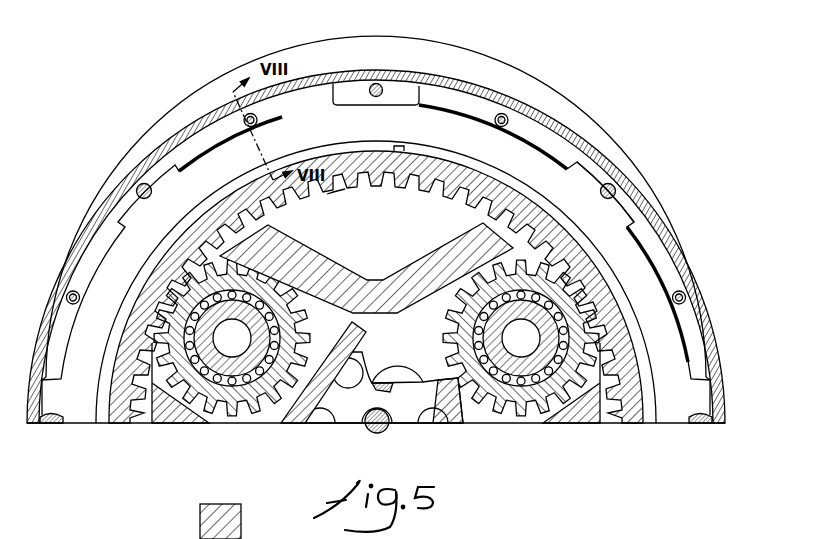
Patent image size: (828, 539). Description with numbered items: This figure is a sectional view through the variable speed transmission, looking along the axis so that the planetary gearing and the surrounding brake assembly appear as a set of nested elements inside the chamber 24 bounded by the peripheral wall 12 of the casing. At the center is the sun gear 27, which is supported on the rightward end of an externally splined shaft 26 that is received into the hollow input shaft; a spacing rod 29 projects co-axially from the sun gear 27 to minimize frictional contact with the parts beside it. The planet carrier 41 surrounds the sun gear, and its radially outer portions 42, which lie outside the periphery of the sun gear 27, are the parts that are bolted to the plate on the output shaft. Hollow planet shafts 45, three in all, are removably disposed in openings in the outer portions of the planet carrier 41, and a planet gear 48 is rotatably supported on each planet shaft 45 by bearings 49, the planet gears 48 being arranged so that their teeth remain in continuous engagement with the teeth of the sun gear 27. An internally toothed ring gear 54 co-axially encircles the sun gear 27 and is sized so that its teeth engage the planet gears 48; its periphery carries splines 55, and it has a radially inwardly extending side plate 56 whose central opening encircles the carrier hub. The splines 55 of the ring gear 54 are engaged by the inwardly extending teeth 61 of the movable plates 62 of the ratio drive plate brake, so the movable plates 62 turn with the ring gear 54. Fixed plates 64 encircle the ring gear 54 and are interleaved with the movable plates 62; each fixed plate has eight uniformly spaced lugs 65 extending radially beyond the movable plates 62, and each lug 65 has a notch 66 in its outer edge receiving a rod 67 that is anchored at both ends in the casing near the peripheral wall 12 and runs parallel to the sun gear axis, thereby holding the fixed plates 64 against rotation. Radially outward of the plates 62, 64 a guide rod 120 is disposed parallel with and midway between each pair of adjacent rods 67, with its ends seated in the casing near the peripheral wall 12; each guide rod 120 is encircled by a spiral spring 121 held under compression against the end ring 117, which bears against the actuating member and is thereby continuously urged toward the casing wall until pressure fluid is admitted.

The peripheral wall 12 is at (500, 97).
The chamber 24 is at (557, 123).
The externally splined shaft 26 is at (387, 386).
The sun gear 27 is at (300, 402).
The spacing rod 29 is at (385, 425).
The planet carrier 41 is at (376, 279).
The portions of the planet carrier 42 is at (447, 266).
The hollow planet shaft 45 is at (562, 416).
The planet gear 48 is at (222, 378).
The bearings 49 is at (498, 373).
The ring gear 54 is at (500, 193).
The splines 55 is at (398, 150).
The side plate 56 is at (335, 203).
The inwardly extending teeth 61 is at (467, 160).
The movable plates 62 is at (393, 140).
The fixed plates 64 is at (627, 250).
The lugs 65 is at (618, 207).
The notch 66 is at (613, 176).
The rod 67 is at (617, 176).
The end ring 117 is at (432, 101).
The guide rod 120 is at (686, 294).
The spiral spring 121 is at (687, 303).